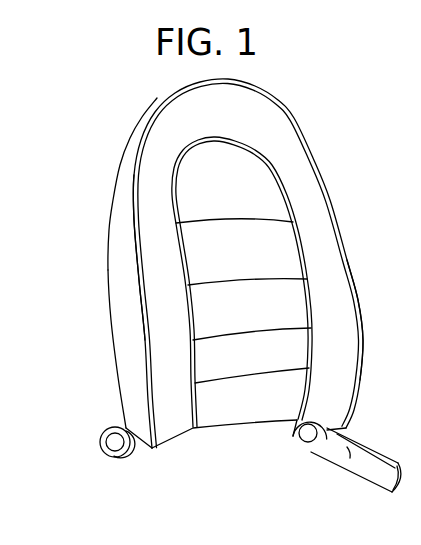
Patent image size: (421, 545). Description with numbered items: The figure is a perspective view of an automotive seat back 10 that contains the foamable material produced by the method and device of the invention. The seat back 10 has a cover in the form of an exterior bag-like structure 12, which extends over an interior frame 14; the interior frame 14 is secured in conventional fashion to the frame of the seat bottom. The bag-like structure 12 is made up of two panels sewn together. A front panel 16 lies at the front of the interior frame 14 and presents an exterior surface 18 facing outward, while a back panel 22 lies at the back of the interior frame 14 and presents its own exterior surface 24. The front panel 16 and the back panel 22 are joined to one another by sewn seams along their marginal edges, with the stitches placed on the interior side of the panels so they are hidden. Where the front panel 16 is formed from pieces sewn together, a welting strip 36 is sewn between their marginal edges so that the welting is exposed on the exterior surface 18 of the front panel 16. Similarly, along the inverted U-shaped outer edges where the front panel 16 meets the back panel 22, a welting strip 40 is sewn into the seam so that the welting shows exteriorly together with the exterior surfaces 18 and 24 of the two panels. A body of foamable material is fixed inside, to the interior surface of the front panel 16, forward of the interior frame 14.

The seat back 10 is at (221, 283).
The bag-like structure 12 is at (99, 278).
The interior frame 14 is at (338, 472).
The front panel 16 is at (325, 257).
The exterior surface 18 is at (305, 167).
The back panel 22 is at (118, 314).
The exterior surface 24 is at (118, 201).
The welting strip 36 is at (312, 308).
The welting strip 40 is at (140, 263).